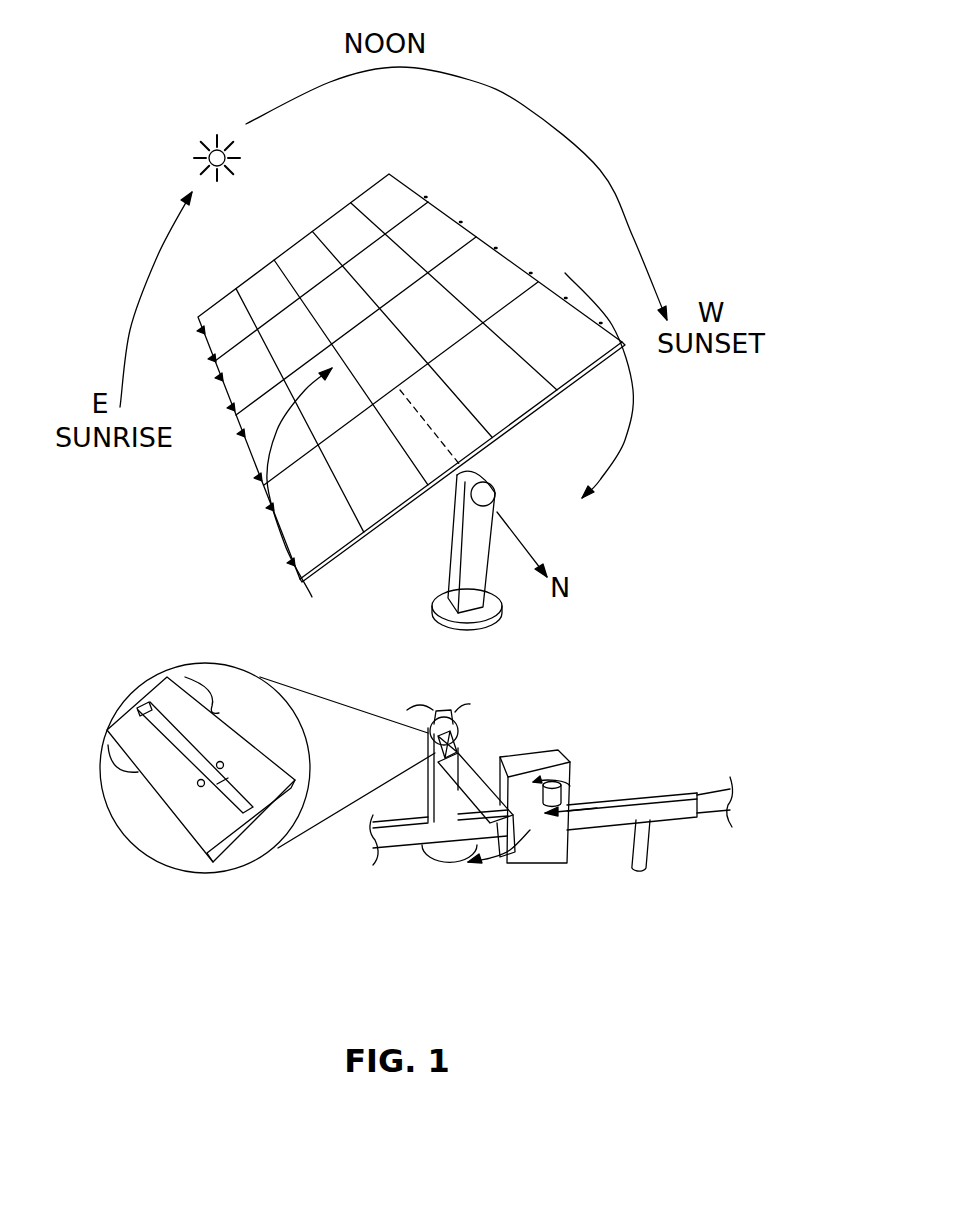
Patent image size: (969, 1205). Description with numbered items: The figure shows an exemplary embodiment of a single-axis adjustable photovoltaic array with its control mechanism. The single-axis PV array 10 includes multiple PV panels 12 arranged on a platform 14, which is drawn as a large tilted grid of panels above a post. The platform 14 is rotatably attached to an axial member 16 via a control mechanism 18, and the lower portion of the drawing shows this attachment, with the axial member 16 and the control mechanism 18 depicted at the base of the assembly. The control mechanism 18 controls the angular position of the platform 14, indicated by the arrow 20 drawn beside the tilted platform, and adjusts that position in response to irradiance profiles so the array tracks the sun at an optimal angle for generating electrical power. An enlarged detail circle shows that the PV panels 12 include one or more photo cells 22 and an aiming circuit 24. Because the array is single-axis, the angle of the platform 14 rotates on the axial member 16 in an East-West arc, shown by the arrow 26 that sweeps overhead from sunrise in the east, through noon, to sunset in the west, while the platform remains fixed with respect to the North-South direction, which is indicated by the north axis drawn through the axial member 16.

The single-axis PV array 10 is at (350, 190).
The PV panels 12 is at (143, 712).
The platform 14 is at (258, 428).
The axial member 16 is at (495, 478).
The control mechanism 18 is at (572, 882).
The angular position 20 is at (270, 537).
The photo cells 22 is at (226, 764).
The aiming circuit 24 is at (193, 883).
The arrow indicating East-West arc 26 is at (523, 105).